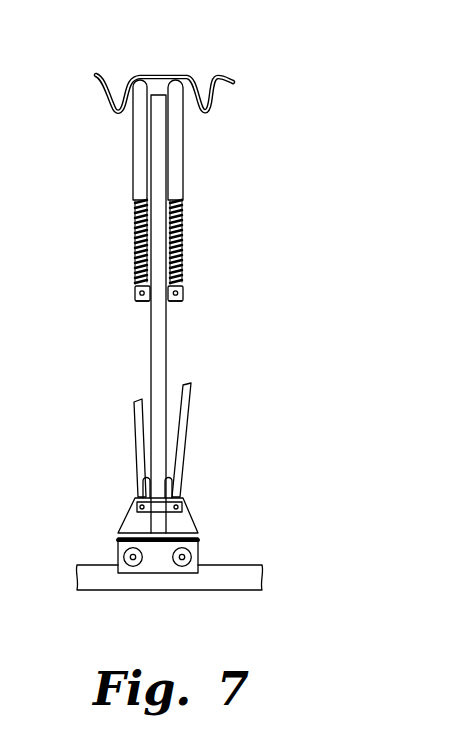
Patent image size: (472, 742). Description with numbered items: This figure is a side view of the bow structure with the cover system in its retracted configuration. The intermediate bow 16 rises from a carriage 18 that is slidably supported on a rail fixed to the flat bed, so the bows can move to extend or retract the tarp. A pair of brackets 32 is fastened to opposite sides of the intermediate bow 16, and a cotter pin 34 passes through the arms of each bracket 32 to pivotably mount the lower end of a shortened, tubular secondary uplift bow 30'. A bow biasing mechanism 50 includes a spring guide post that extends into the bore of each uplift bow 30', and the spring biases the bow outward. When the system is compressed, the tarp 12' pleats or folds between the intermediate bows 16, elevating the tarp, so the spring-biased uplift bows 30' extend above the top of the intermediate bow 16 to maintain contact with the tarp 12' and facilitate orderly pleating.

The tarp 12' is at (164, 67).
The secondary uplift bow 30' is at (169, 140).
The bow biasing mechanism 50 is at (110, 236).
The cotter pin 34 is at (135, 293).
The bracket 32 is at (148, 302).
The intermediate bow 16 is at (160, 420).
The carriage 18 is at (182, 520).